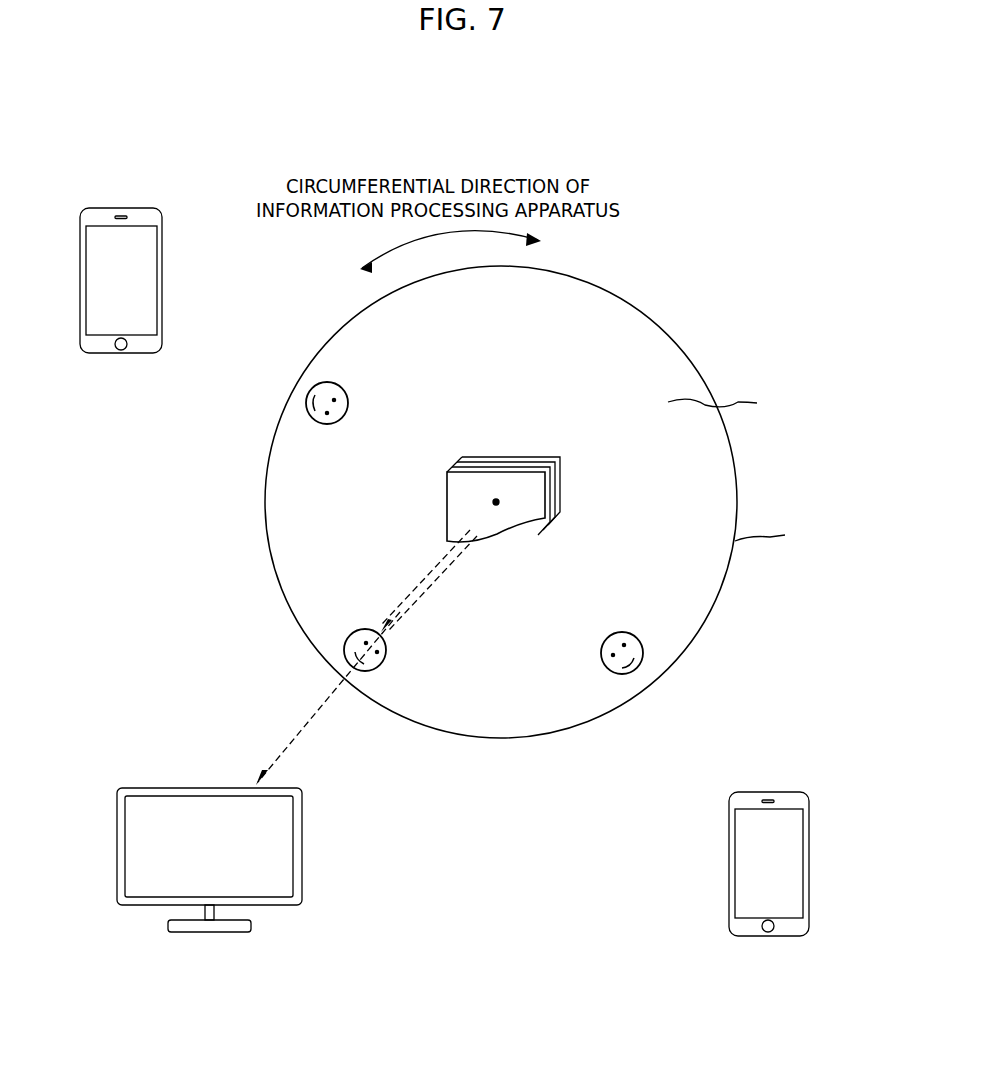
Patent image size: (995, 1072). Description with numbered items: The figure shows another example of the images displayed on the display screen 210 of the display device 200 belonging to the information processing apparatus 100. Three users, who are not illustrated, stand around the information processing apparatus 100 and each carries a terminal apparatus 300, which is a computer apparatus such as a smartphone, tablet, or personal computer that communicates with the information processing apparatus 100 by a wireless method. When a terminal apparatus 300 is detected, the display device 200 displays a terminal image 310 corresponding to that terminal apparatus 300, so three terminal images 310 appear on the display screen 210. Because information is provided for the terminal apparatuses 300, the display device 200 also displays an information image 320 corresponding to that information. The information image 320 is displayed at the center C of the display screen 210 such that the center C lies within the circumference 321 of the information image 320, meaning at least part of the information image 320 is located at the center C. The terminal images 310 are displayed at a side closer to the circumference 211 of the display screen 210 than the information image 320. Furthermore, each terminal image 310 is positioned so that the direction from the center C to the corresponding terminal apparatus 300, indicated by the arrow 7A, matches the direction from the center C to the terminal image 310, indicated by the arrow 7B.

The information processing apparatus 100 is at (666, 200).
The display device 200 is at (665, 312).
The display screen 210 is at (734, 403).
The circumference of the display screen 211 is at (782, 534).
The terminal apparatus 300 is at (106, 195).
The terminal image 310 is at (322, 378).
The information image 320 is at (551, 457).
The circumference of the information image 321 is at (553, 489).
The center of the display screen C is at (497, 496).
The arrow indicating direction to terminal apparatus 7A is at (420, 598).
The arrow indicating direction to terminal image 7B is at (420, 572).